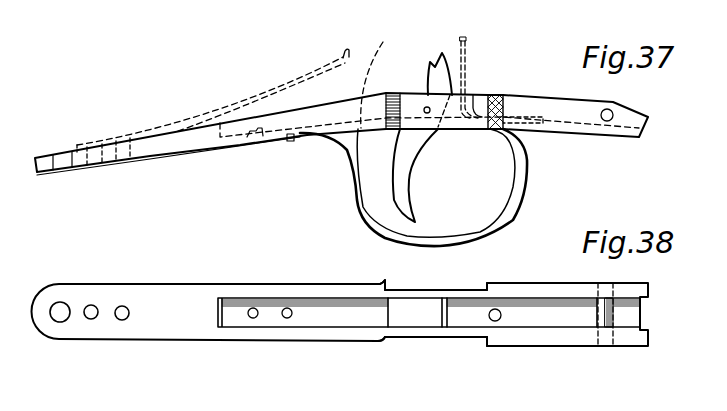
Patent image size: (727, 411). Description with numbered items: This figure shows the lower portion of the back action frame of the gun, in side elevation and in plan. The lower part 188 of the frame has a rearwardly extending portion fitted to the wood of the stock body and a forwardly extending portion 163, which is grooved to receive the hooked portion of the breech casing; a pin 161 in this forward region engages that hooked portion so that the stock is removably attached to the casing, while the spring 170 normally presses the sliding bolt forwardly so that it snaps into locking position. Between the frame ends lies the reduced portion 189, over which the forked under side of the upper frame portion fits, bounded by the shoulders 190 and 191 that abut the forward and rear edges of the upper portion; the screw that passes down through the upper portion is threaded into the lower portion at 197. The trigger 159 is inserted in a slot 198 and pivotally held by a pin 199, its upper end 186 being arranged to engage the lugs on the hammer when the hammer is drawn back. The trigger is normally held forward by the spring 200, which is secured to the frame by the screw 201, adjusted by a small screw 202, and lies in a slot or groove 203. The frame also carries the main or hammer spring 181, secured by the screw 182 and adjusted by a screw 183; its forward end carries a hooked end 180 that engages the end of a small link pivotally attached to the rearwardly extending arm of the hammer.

In FIG. 37, the trigger 159 is at (397, 178).
In FIG. 37, the pin 161 is at (605, 121).
In FIG. 38, the pin 161 is at (604, 320).
In FIG. 37, the forwardly extending portion 163 is at (563, 107).
In FIG. 37, the spring 170 is at (466, 38).
In FIG. 37, the hooked end 180 is at (340, 52).
In FIG. 37, the main or hammer spring 181 is at (253, 95).
In FIG. 37, the screw 182 is at (93, 166).
In FIG. 37, the screw 183 is at (137, 160).
In FIG. 37, the upper end of the trigger 186 is at (433, 52).
In FIG. 37, the lower part of the back action frame 188 is at (337, 133).
In FIG. 37, the reduced portion 189 is at (473, 95).
In FIG. 38, the reduced portion 189 is at (427, 346).
In FIG. 38, the shoulder 190 is at (485, 346).
In FIG. 38, the shoulder 191 is at (383, 346).
In FIG. 37, the threaded portion 197 is at (503, 98).
In FIG. 38, the threaded portion 197 is at (499, 308).
In FIG. 38, the slot 198 is at (413, 308).
In FIG. 37, the pin 199 is at (424, 107).
In FIG. 37, the spring 200 is at (383, 42).
In FIG. 37, the screw 201 is at (258, 140).
In FIG. 37, the small screw 202 is at (290, 142).
In FIG. 38, the slot or groove 203 is at (282, 320).